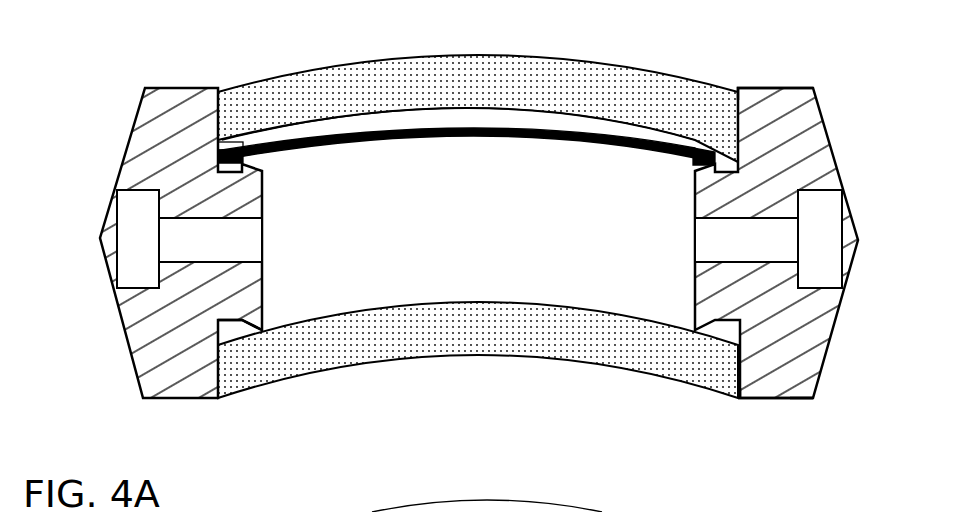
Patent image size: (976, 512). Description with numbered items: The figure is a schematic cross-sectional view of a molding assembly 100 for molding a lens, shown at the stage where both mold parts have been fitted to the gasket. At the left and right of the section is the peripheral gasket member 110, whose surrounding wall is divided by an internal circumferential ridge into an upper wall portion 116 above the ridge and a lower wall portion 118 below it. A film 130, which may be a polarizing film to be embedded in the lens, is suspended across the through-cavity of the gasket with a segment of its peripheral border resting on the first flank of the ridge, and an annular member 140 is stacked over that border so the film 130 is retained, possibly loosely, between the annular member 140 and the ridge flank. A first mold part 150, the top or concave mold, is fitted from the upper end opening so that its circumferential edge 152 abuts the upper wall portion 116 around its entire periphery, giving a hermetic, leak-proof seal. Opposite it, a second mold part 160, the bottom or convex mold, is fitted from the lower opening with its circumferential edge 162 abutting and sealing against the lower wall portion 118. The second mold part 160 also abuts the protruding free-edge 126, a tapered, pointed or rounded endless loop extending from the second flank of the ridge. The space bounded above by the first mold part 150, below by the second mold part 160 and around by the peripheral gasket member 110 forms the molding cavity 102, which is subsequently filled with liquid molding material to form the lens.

The molding assembly 100 is at (864, 130).
The molding cavity 102 is at (322, 255).
The peripheral gasket member 110 is at (830, 113).
The upper wall portion 116 is at (773, 95).
The lower wall portion 118 is at (782, 360).
The protruding free-edge 126 is at (256, 330).
The film 130 is at (452, 133).
The annular member 140 is at (672, 158).
The first mold part 150 is at (613, 77).
The circumferential edge of the first mold part 152 is at (742, 148).
The second mold part 160 is at (600, 355).
The circumferential edge of the second mold part 162 is at (813, 393).